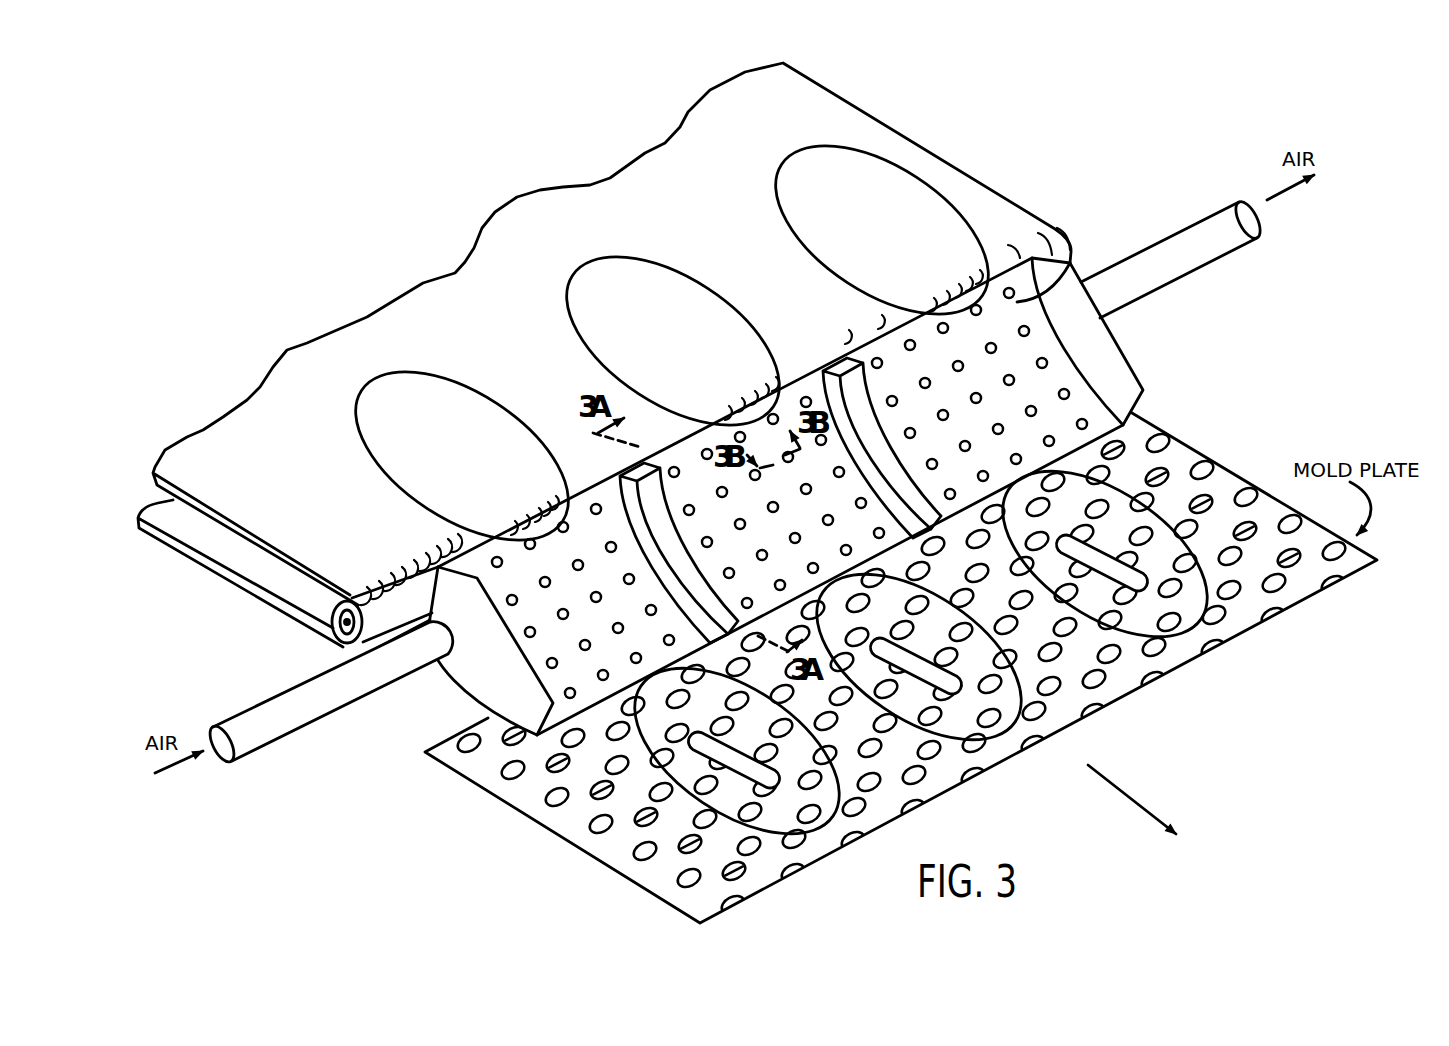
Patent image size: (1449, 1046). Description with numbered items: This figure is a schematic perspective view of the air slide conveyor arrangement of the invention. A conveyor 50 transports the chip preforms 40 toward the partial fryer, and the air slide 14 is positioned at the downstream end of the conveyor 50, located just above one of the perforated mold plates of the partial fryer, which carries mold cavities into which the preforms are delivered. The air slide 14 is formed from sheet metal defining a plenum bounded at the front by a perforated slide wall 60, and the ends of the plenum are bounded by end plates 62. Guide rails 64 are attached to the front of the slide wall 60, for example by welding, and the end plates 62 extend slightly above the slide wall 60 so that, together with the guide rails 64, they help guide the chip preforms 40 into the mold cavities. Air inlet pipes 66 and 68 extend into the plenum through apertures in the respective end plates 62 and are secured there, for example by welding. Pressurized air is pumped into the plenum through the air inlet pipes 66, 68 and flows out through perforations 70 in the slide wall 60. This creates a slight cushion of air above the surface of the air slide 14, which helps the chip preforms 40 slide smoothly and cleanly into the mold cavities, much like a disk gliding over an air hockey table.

The air slide 14 is at (1163, 332).
The chip preforms 40 is at (797, 187).
The conveyor 50 is at (790, 93).
The slide wall 60 is at (1070, 263).
The end plates 62 is at (470, 685).
The guide rails 64 is at (610, 477).
The air inlet pipe 66 is at (275, 713).
The air inlet pipe 68 is at (1213, 232).
The perforations 70 is at (963, 362).